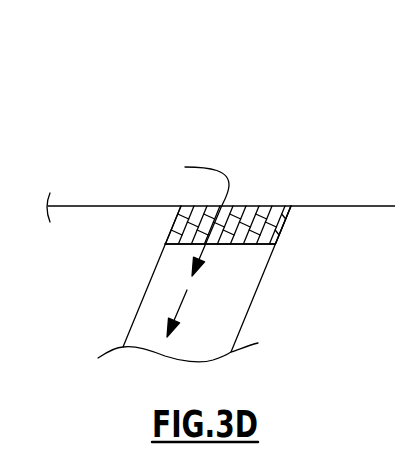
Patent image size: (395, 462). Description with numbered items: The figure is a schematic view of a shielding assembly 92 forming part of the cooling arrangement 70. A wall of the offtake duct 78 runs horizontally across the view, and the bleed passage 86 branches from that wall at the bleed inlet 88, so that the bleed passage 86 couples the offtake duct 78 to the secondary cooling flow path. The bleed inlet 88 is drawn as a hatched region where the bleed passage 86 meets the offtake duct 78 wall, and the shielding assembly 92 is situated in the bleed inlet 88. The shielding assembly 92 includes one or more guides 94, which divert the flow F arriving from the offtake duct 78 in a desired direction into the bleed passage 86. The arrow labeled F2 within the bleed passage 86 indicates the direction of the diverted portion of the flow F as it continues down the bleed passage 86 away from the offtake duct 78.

The cooling arrangement 70 is at (122, 75).
The offtake duct 78 is at (102, 206).
The bleed passage 86 is at (245, 319).
The bleed inlet 88 is at (254, 206).
The shielding assembly 92 is at (284, 221).
The guides 94 is at (240, 245).
The flow F is at (205, 166).
The force component F2 is at (172, 308).